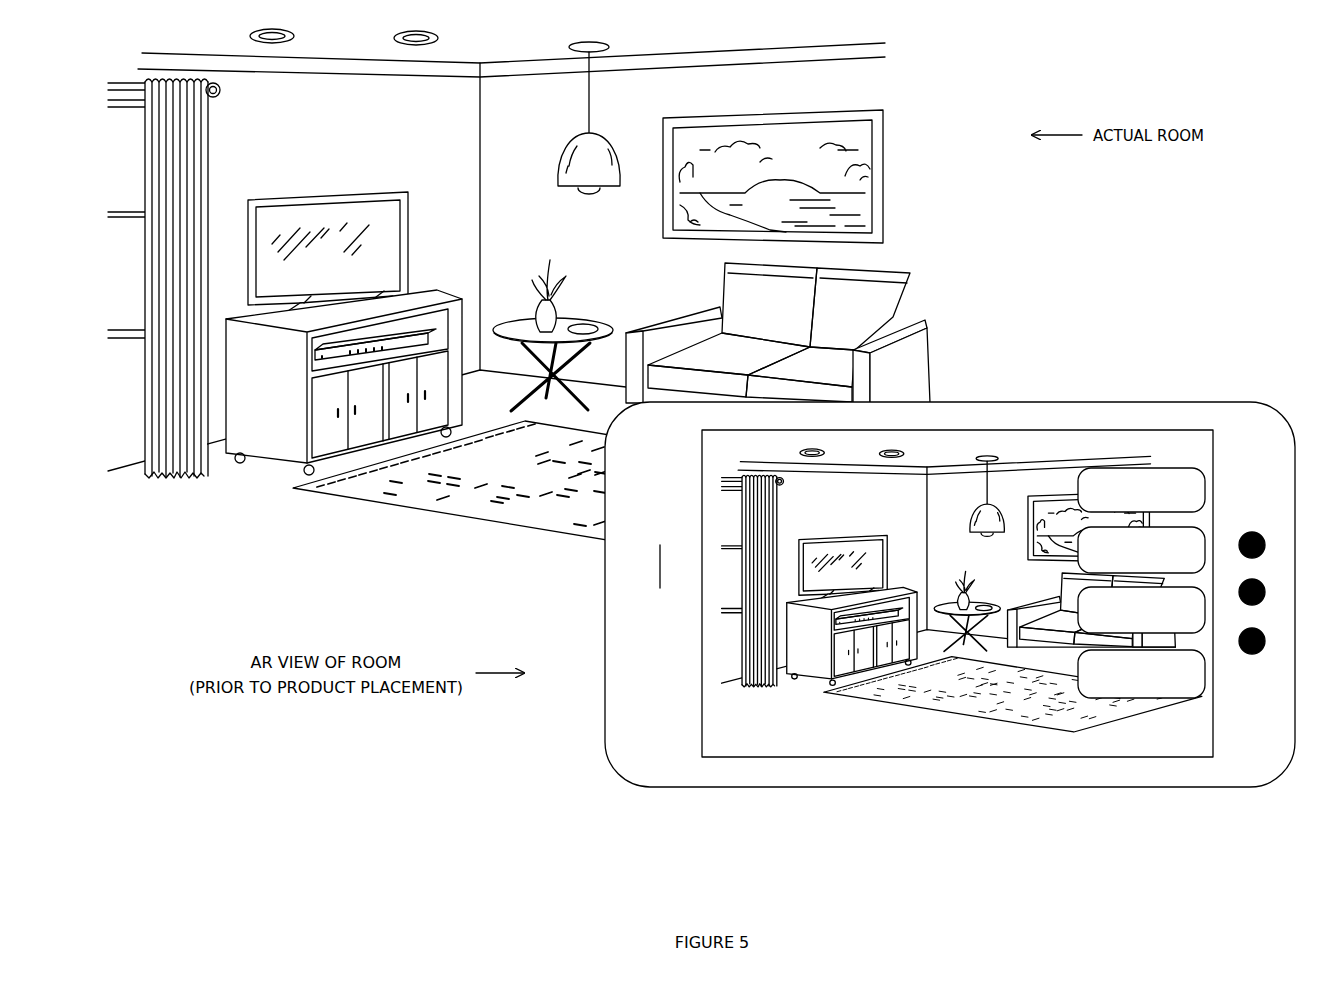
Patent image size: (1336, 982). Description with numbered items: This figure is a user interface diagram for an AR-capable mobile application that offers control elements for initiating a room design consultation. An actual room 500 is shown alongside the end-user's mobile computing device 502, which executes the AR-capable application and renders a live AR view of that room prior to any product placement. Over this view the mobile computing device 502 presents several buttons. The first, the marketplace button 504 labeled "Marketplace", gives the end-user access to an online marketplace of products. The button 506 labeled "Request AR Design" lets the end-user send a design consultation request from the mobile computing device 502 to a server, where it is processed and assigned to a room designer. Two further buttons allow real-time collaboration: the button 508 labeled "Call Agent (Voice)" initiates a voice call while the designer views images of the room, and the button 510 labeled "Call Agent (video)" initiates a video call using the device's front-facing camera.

The actual room 500 is at (893, 85).
The mobile computing device 502 is at (950, 620).
The marketplace button 504 is at (1205, 470).
The button 506 is at (1204, 529).
The button 508 is at (1205, 608).
The button 510 is at (1205, 672).